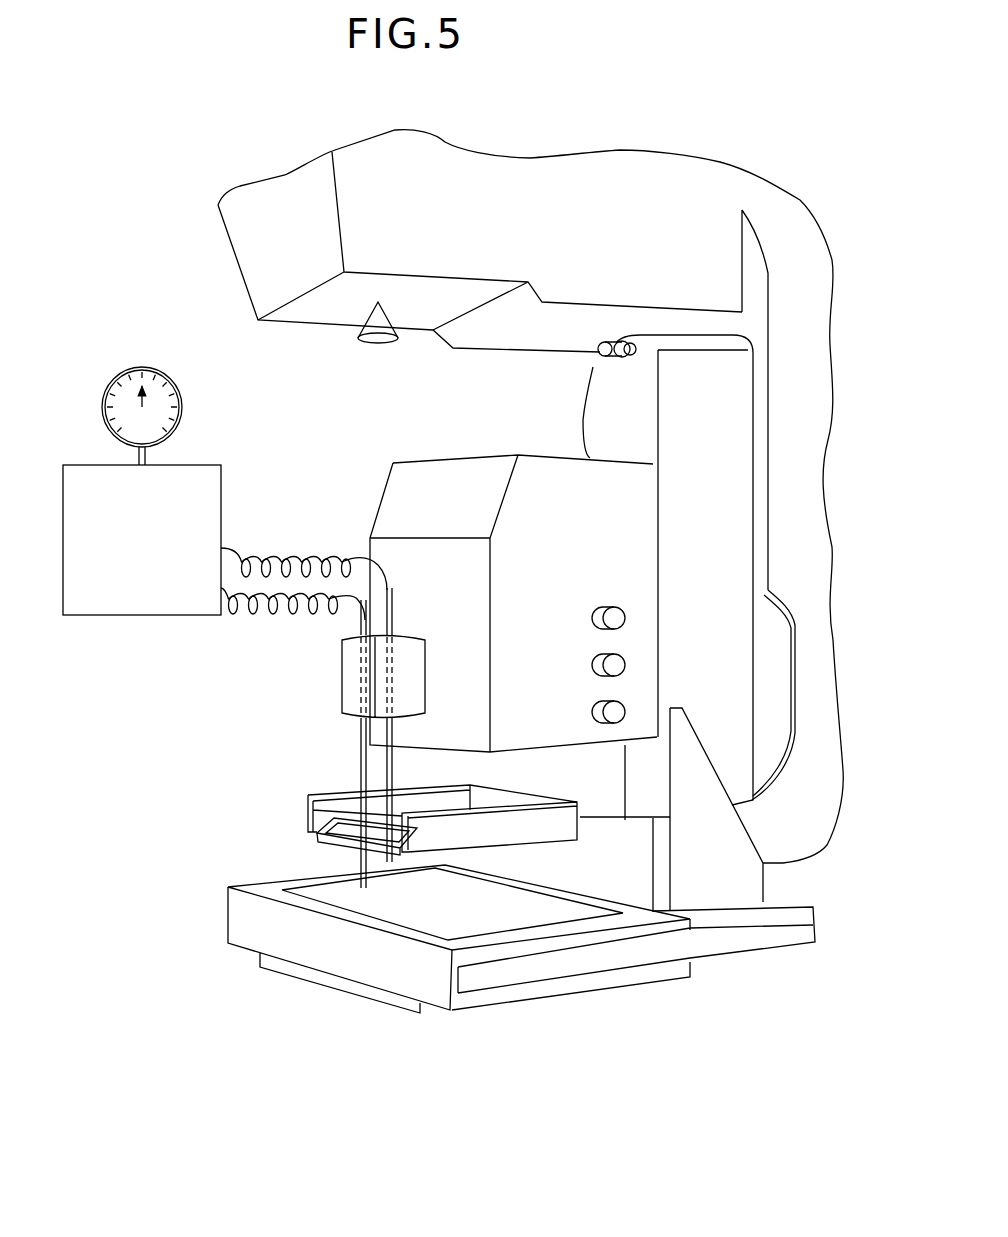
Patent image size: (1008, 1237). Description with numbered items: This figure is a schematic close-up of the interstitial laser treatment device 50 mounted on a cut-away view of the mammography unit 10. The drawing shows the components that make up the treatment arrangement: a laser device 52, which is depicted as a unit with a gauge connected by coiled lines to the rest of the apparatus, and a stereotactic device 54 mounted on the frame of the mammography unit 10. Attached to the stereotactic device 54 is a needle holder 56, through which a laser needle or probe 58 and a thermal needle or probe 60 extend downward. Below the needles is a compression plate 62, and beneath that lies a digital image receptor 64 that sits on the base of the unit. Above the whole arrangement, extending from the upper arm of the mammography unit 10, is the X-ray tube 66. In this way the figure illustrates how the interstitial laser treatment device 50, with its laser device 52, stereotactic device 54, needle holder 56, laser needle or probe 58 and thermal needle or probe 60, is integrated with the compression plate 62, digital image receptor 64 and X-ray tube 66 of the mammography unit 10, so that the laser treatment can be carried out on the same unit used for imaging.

The mammography unit 10 is at (795, 425).
The interstitial laser treatment device 50 is at (173, 325).
The laser device 52 is at (157, 540).
The stereotactic device 54 is at (594, 550).
The needle holder 56 is at (336, 673).
The laser needle or probe 58 is at (355, 754).
The thermal needle or probe 60 is at (380, 810).
The compression plate 62 is at (479, 838).
The digital image receptor 64 is at (308, 946).
The X-ray tube 66 is at (443, 228).